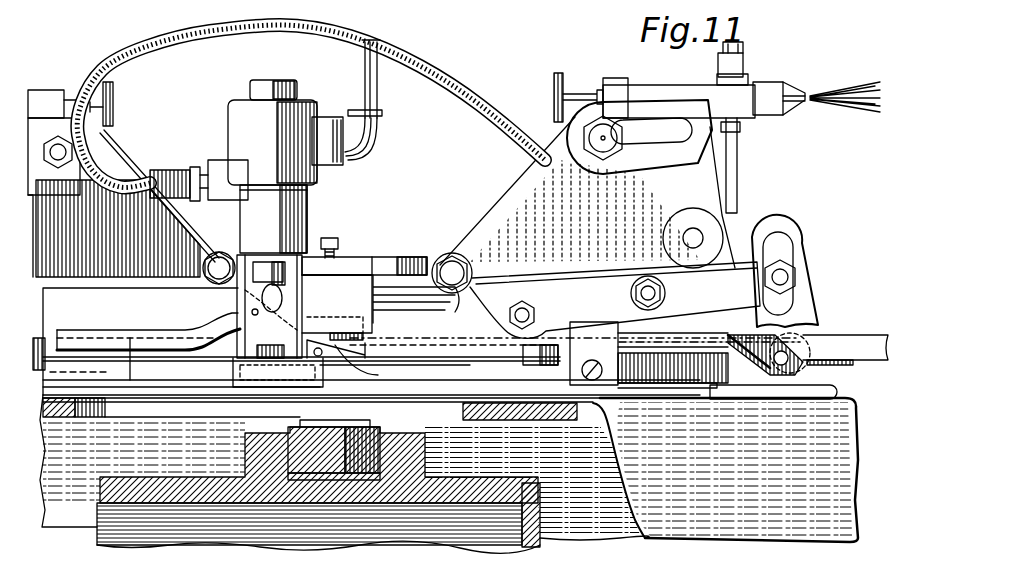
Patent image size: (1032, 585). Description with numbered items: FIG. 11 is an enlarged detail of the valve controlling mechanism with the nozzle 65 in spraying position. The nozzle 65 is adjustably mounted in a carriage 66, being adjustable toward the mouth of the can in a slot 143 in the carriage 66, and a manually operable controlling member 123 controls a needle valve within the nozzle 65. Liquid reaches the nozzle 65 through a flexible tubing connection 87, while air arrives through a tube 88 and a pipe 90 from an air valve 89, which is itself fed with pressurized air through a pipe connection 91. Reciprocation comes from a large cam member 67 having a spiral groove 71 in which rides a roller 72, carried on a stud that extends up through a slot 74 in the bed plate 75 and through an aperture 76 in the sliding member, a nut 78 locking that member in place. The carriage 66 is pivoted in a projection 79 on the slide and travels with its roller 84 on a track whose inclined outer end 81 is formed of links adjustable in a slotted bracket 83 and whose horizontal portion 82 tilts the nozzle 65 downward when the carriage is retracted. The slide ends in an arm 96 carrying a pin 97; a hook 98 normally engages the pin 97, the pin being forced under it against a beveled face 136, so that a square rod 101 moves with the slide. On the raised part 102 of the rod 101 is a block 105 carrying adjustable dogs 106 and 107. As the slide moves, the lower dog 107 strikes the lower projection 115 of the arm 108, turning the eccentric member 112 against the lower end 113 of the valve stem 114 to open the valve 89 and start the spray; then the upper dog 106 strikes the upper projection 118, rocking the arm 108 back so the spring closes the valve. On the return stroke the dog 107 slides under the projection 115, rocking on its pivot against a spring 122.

The nozzle 65 is at (645, 97).
The carriage 66 is at (100, 197).
The cam member 67 is at (210, 492).
The spiral groove 71 is at (372, 477).
The roller 72 is at (334, 453).
The slot 74 is at (431, 405).
The bed plate 75 is at (60, 420).
The aperture 76 is at (287, 377).
The nut 78 is at (395, 300).
The projection 79 is at (466, 250).
The inclined outer end of track 81 is at (733, 263).
The horizontal portion of track 82 is at (493, 305).
The slotted bracket 83 is at (792, 250).
The roller 84 is at (708, 244).
The flexible tubing connection 87 is at (742, 68).
The tube 88 is at (420, 68).
The air valve 89 is at (247, 125).
The pipe 90 is at (735, 160).
The pipe connection 91 is at (377, 93).
The arm 96 is at (682, 375).
The pin 97 is at (788, 356).
The hook 98 is at (820, 366).
The square rod 101 is at (674, 341).
The raised part 102 is at (586, 336).
The block 105 is at (328, 283).
The dog 106 is at (358, 260).
The dog 107 is at (362, 363).
The arm 108 is at (200, 320).
The eccentric member 112 is at (262, 297).
The lower end of valve stem 113 is at (302, 256).
The valve stem 114 is at (292, 300).
The lower projection 115 is at (202, 358).
The upper projection 118 is at (238, 255).
The spring 122 is at (360, 341).
The manually operable controlling member 123 is at (113, 111).
The beveled face 136 is at (735, 392).
The slot 143 is at (628, 152).